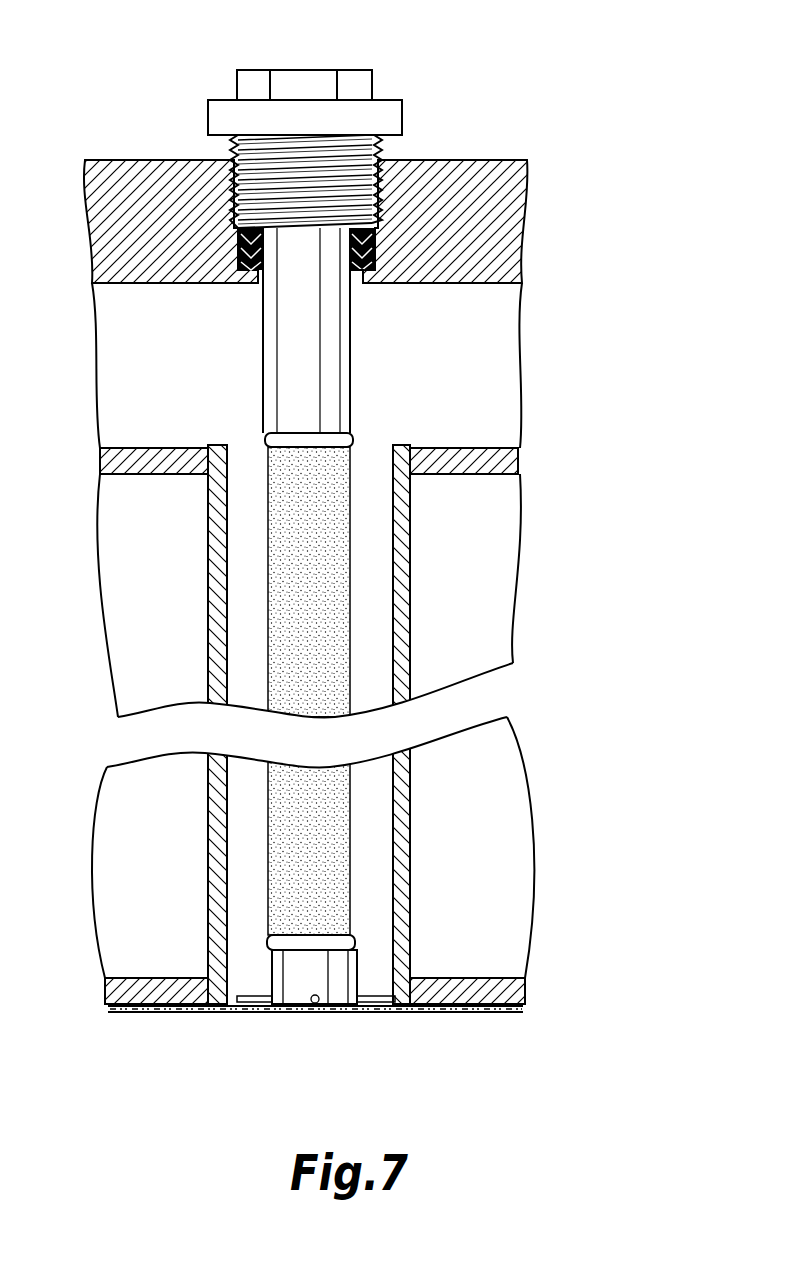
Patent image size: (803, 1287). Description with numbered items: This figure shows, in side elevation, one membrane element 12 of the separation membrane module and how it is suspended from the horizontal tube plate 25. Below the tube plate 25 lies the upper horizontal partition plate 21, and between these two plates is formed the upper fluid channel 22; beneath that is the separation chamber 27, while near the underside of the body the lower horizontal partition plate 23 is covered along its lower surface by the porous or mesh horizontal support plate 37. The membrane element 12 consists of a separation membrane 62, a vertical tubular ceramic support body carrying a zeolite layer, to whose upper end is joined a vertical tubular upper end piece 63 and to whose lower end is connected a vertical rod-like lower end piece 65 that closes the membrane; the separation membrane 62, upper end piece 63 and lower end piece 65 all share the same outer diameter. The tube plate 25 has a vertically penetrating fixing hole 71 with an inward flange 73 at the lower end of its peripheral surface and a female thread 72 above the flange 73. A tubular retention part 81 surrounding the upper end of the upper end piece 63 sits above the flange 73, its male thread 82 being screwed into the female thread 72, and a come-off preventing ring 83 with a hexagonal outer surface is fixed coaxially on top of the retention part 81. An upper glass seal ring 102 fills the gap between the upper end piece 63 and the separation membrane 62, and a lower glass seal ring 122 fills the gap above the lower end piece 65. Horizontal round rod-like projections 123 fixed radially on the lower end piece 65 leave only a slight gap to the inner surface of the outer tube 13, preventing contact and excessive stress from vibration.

The membrane element 12 is at (353, 585).
The outer tube 13 is at (405, 810).
The upper horizontal partition plate 21 is at (518, 455).
The upper fluid channel 22 is at (177, 372).
The lower horizontal partition plate 23 is at (513, 990).
The tube plate 25 is at (478, 167).
The separation chamber 27 is at (177, 626).
The horizontal support plate 37 is at (473, 1013).
The separation membrane 62 is at (280, 870).
The upper end piece 63 is at (327, 357).
The lower end piece 65 is at (290, 1000).
The fixing hole 71 is at (370, 245).
The female thread 72 is at (243, 203).
The inward flange 73 is at (363, 277).
The retention part 81 is at (380, 108).
The male thread 82 is at (232, 155).
The come-off preventing ring 83 is at (303, 80).
The upper glass seal ring 102 is at (352, 440).
The lower glass seal ring 122 is at (357, 943).
The projection 123 is at (373, 1000).